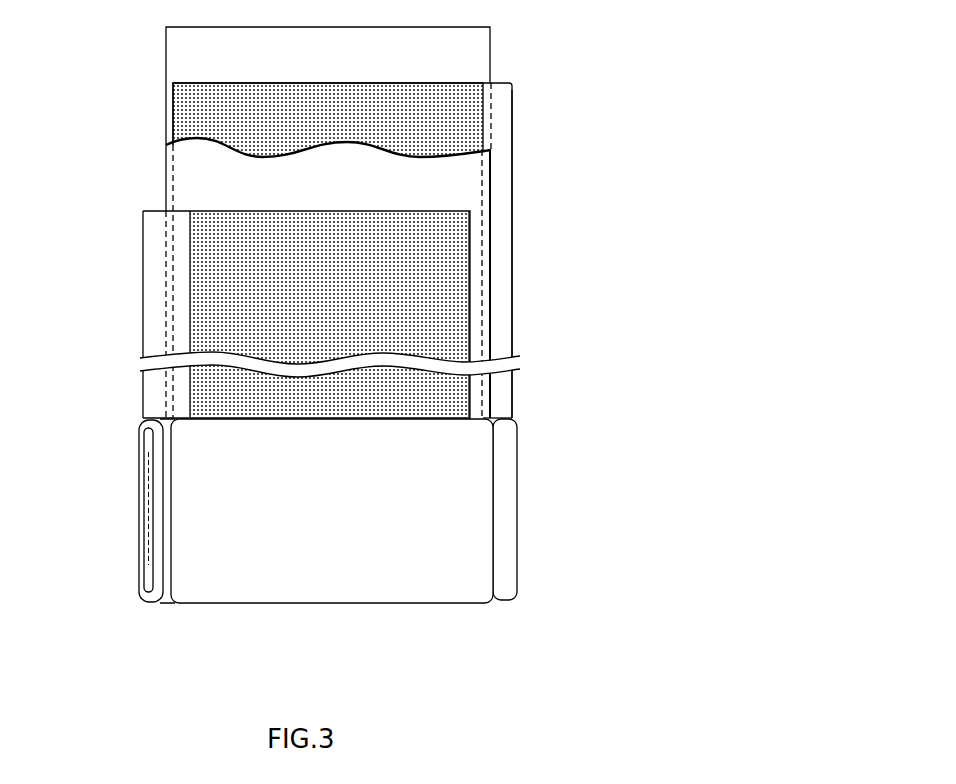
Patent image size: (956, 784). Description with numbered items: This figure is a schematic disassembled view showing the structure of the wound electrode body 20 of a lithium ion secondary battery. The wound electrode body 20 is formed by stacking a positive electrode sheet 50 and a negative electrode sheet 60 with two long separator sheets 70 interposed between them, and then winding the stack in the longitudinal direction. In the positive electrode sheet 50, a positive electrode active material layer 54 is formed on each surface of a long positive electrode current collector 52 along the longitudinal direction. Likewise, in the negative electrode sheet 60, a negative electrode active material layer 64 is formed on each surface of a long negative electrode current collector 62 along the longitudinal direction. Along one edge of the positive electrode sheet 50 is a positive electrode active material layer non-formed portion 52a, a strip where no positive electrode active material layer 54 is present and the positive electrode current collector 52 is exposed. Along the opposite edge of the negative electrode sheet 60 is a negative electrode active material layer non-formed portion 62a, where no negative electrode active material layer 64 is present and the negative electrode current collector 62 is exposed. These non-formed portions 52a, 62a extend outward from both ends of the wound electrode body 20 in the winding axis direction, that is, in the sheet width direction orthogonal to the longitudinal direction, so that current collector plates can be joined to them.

The wound electrode body 20 is at (412, 580).
The positive electrode sheet 50 is at (244, 406).
The positive electrode current collector 52 is at (142, 343).
The positive electrode active material layer non-formed portion 52a is at (158, 517).
The positive electrode active material layer 54 is at (203, 226).
The negative electrode sheet 60 is at (395, 341).
The negative electrode current collector 62 is at (512, 257).
The negative electrode active material layer non-formed portion 62a is at (500, 205).
The negative electrode active material layer 64 is at (478, 102).
The separator sheet 70 is at (182, 56).